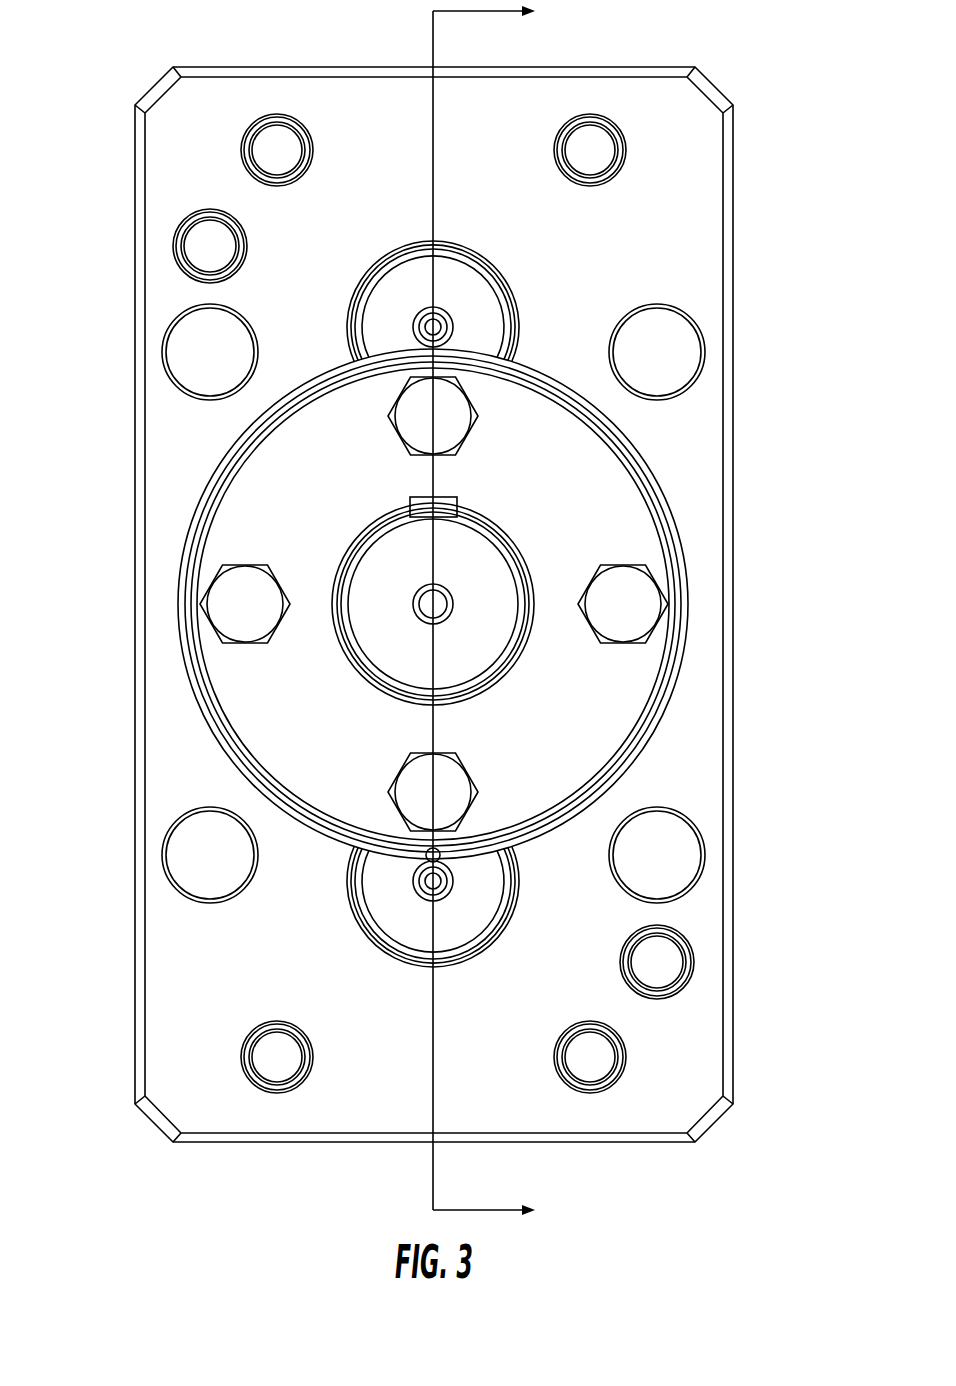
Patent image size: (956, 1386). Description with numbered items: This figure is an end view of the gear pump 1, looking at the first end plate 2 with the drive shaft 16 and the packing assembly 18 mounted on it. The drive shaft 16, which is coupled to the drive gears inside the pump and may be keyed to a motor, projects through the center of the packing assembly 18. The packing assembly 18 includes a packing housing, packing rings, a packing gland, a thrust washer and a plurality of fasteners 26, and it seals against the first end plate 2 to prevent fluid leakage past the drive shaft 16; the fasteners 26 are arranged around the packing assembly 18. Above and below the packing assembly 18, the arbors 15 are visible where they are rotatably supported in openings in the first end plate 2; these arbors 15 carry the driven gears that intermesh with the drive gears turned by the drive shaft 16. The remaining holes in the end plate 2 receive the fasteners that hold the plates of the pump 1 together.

The gear pump 1 is at (97, 140).
The first end plate 2 is at (683, 120).
The arbor 15 is at (470, 302).
The packing assembly 18 is at (608, 524).
The fastener 26 is at (623, 597).
The drive shaft 16 is at (461, 647).